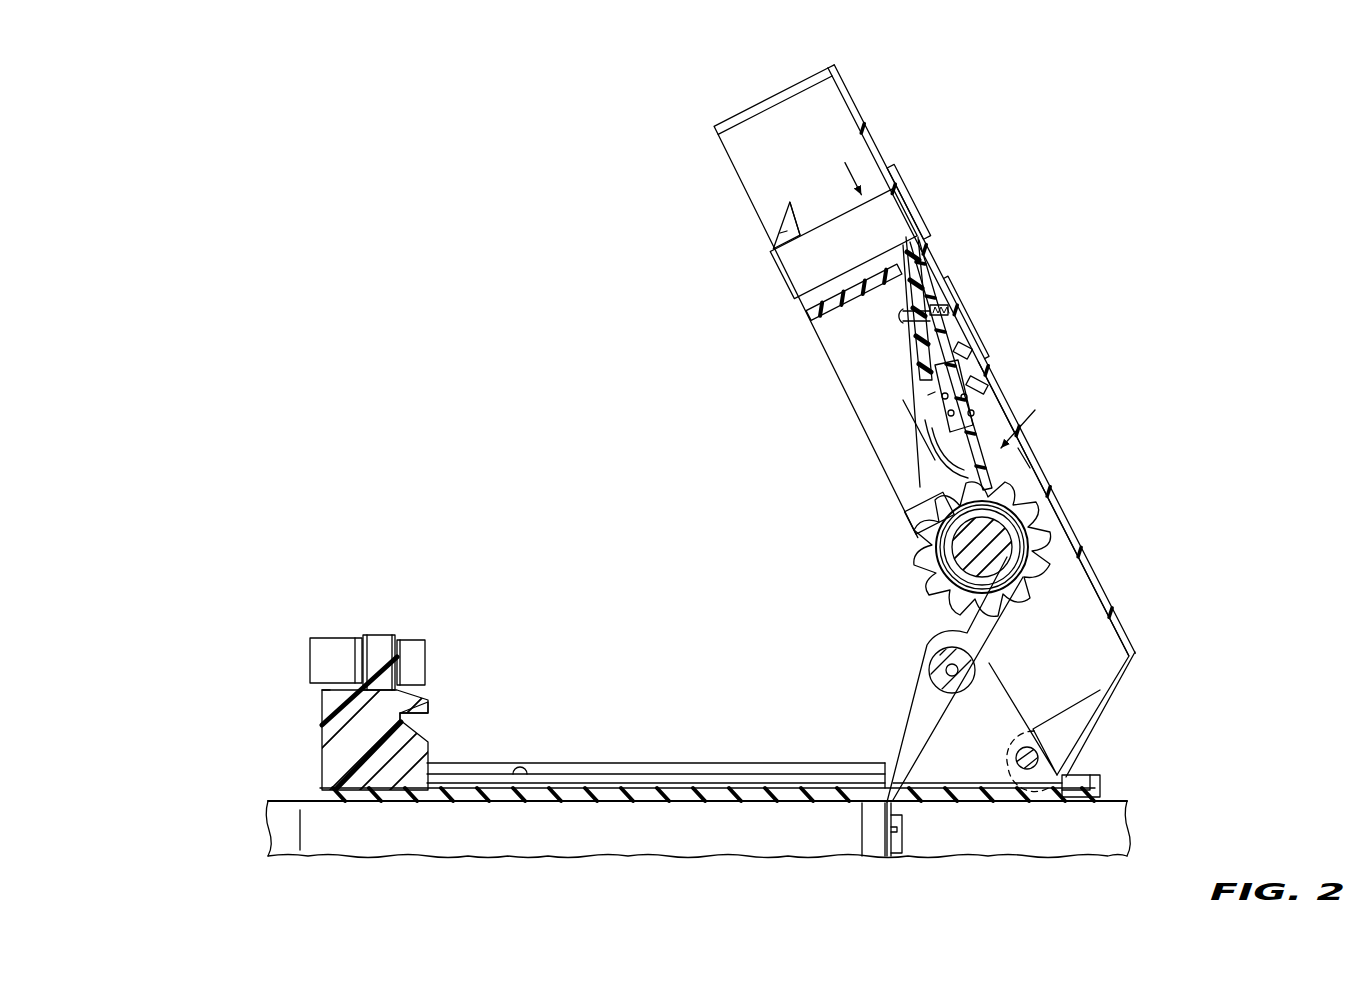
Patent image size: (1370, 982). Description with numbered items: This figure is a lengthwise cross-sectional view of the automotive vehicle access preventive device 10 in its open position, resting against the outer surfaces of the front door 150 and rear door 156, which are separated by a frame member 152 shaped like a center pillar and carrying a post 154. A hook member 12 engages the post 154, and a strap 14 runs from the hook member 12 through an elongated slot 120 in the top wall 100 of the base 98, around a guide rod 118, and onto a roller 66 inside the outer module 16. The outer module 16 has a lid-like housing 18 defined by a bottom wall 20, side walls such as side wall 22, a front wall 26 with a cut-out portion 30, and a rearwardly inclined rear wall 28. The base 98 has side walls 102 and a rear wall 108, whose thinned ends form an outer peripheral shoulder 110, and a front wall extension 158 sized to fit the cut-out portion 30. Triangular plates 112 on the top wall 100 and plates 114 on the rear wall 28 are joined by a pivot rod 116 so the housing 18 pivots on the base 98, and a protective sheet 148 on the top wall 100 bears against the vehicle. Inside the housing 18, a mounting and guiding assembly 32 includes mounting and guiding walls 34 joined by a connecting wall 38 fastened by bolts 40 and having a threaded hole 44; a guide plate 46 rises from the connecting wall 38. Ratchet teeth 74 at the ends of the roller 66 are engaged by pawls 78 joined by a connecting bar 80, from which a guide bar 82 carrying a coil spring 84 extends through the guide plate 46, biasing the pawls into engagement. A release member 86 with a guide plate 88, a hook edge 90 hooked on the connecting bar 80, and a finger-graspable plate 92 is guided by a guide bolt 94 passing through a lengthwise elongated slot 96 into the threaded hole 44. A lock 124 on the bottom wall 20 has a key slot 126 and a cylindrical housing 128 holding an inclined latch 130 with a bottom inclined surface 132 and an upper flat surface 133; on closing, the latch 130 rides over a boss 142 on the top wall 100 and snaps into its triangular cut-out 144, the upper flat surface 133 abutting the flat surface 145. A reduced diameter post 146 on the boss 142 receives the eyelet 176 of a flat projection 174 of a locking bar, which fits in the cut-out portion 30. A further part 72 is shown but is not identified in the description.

The automotive vehicle access preventive device 10 is at (633, 243).
The hook member 12 is at (875, 822).
The strap 14 is at (904, 740).
The outer module 16 is at (1106, 566).
The housing 18 is at (858, 106).
The bottom wall 20 is at (1050, 484).
The side wall 22 is at (738, 157).
The front wall 26 is at (828, 68).
The rear wall 28 is at (1140, 664).
The cut-out portion 30 is at (736, 120).
The mounting and guiding assembly 32 is at (1034, 420).
The mounting and guiding wall 34 is at (1030, 462).
The connecting wall 38 is at (927, 270).
The bolts 40 is at (978, 337).
The threaded hole 44 is at (952, 313).
The guide plate 46 is at (974, 354).
The roller 66 is at (916, 555).
The bracket 72 is at (903, 513).
The ratchet teeth 74 is at (1022, 535).
The pawls 78 is at (908, 485).
The connecting bar 80 is at (938, 425).
The guide bar 82 is at (916, 378).
The coil spring 84 is at (986, 384).
The release member 86 is at (928, 396).
The guide plate 88 is at (900, 348).
The hook edge 90 is at (933, 455).
The finger-graspable plate 92 is at (833, 318).
The guide bolt 94 is at (948, 303).
The lengthwise elongated slot 96 is at (900, 318).
The base 98 is at (690, 754).
The top wall 100 is at (600, 780).
The side walls 102 is at (590, 785).
The rear wall 108 is at (1102, 790).
The outer peripheral shoulder 110 is at (520, 775).
The triangular plates 112 is at (916, 690).
The plates 114 is at (1072, 720).
The pivot rod 116 is at (1027, 771).
The guide rod 118 is at (940, 650).
The elongated slot 120 is at (883, 784).
The lock 124 is at (856, 185).
The key slot 126 is at (918, 210).
The cylindrical housing 128 is at (772, 266).
The inclined latch 130 is at (786, 233).
The bottom inclined surface 132 is at (783, 216).
The upper flat surface 133 is at (792, 205).
The boss 142 is at (333, 735).
The triangular cut-out 144 is at (430, 722).
The flat surface 145 is at (430, 706).
The post 146 is at (378, 636).
The protective sheet 148 is at (442, 795).
The front door 150 is at (1100, 845).
The frame member 152 is at (890, 842).
The post 154 is at (902, 832).
The rear door 156 is at (312, 855).
The front wall extension 158 is at (322, 693).
The flat projection 174 is at (318, 655).
The eyelet 176 is at (345, 640).